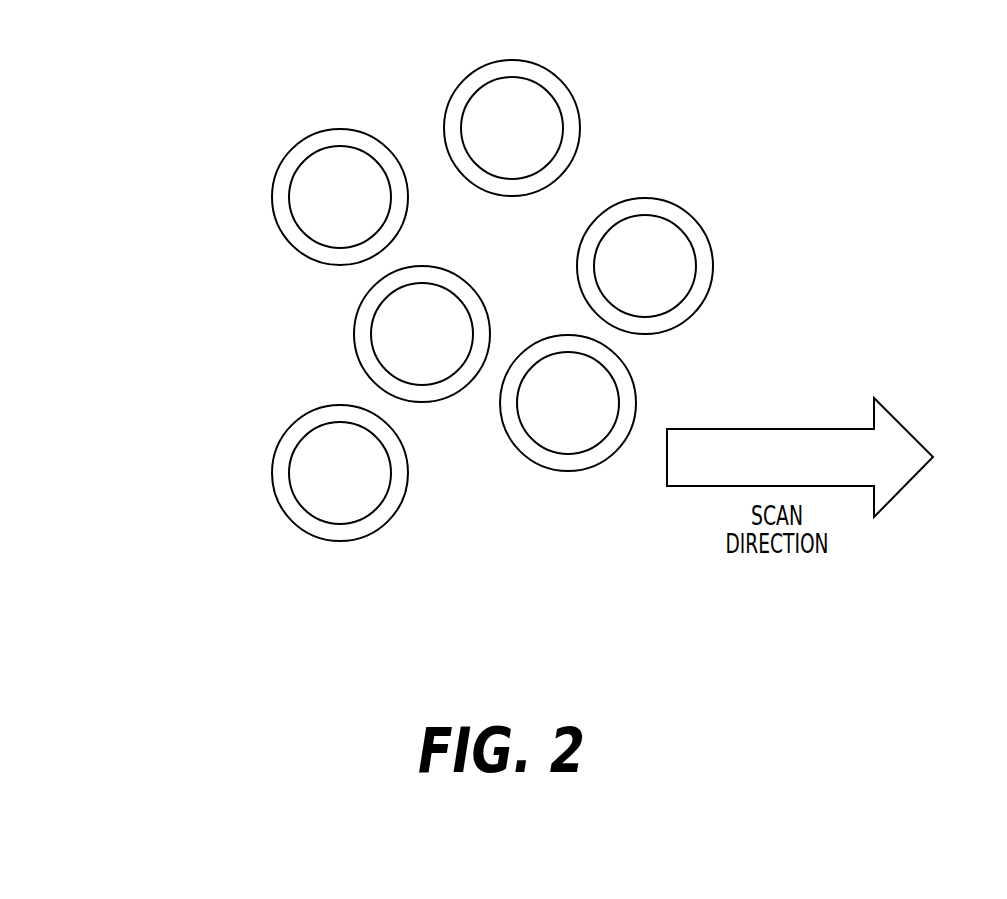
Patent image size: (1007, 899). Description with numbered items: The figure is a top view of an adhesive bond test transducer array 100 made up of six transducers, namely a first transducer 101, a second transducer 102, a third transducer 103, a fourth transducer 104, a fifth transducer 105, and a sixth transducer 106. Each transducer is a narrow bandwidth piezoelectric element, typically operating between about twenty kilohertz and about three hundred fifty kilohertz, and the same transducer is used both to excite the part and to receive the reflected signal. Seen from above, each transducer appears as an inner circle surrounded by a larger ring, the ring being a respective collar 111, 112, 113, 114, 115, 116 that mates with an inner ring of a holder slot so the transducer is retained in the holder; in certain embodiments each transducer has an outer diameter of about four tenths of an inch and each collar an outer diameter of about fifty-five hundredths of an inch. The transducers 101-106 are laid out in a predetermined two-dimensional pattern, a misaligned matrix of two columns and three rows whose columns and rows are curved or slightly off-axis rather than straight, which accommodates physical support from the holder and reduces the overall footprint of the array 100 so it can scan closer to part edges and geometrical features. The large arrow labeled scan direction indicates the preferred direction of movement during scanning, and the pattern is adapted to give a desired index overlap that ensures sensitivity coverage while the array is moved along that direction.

The transducer array 100 is at (96, 174).
The first transducer 101 is at (303, 192).
The second transducer 102 is at (517, 98).
The third transducer 103 is at (655, 247).
The fourth transducer 104 is at (603, 385).
The fifth transducer 105 is at (370, 485).
The sixth transducer 106 is at (432, 307).
The collar 111 is at (278, 222).
The collar 112 is at (573, 128).
The collar 113 is at (704, 265).
The collar 114 is at (590, 460).
The collar 115 is at (280, 476).
The collar 116 is at (362, 337).